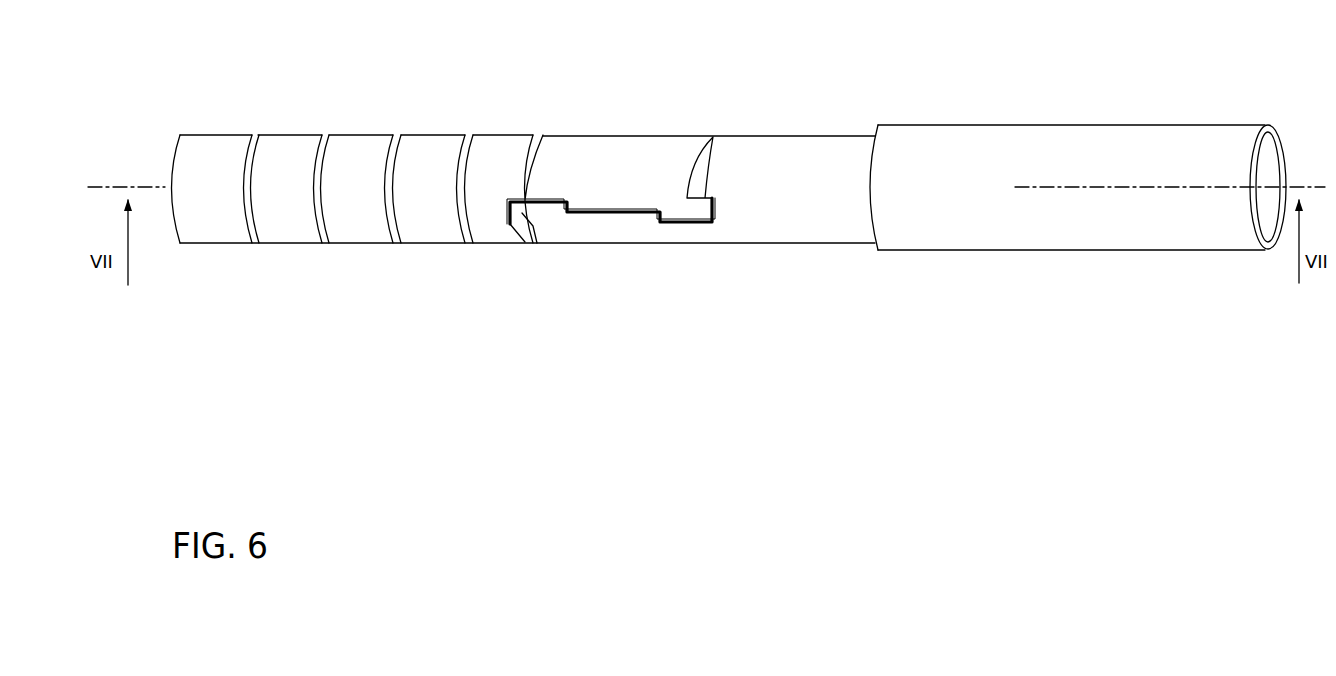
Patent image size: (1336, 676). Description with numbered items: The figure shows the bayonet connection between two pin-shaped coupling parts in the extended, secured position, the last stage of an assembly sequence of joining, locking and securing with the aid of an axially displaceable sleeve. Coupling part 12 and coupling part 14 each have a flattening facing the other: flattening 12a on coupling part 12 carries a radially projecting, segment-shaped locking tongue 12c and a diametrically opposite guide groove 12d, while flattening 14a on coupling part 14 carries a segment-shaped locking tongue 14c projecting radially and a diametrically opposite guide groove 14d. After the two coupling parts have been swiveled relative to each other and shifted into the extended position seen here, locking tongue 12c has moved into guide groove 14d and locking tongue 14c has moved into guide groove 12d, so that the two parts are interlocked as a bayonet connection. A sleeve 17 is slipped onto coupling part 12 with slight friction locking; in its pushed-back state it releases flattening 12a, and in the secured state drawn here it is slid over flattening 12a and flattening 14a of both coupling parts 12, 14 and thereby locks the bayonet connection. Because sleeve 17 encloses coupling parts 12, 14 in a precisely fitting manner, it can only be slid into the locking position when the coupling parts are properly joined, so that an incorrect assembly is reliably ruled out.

The coupling part 12 is at (822, 123).
The flattening 12a is at (603, 215).
The locking tongue 12c is at (522, 210).
The guide groove 12d is at (717, 210).
The coupling part 14 is at (355, 133).
The flattening 14a is at (625, 208).
The locking tongue 14c is at (678, 210).
The guide groove 14d is at (505, 202).
The sleeve 17 is at (995, 117).